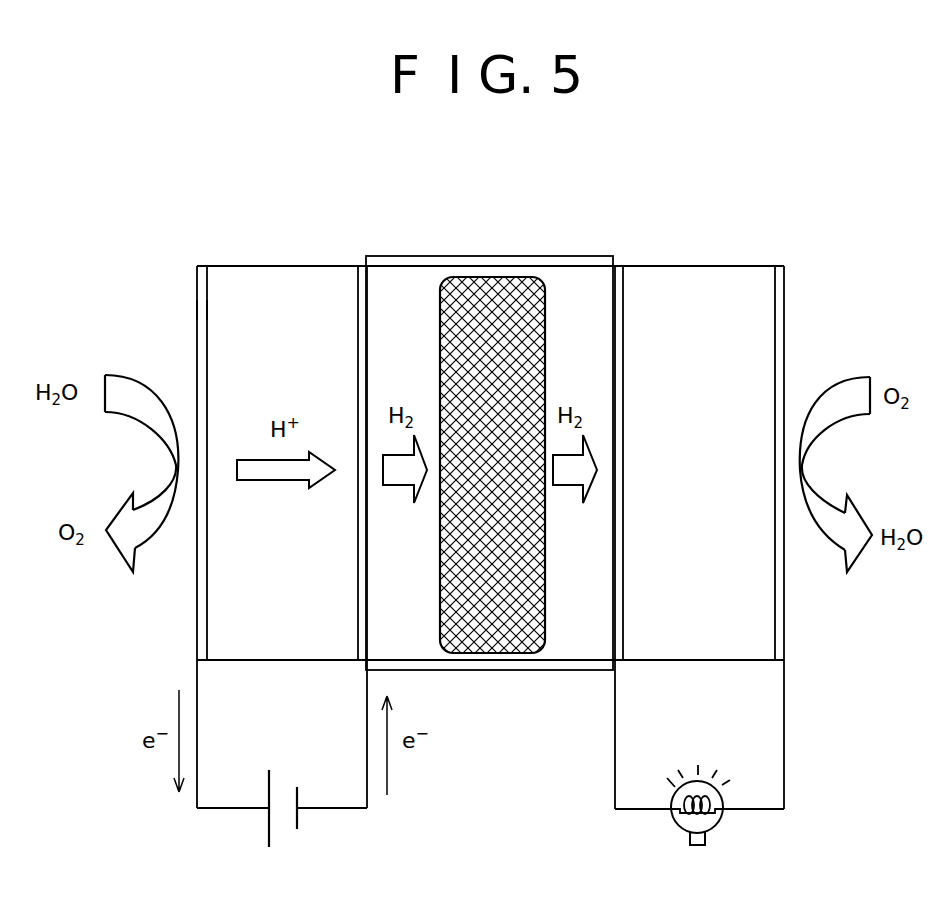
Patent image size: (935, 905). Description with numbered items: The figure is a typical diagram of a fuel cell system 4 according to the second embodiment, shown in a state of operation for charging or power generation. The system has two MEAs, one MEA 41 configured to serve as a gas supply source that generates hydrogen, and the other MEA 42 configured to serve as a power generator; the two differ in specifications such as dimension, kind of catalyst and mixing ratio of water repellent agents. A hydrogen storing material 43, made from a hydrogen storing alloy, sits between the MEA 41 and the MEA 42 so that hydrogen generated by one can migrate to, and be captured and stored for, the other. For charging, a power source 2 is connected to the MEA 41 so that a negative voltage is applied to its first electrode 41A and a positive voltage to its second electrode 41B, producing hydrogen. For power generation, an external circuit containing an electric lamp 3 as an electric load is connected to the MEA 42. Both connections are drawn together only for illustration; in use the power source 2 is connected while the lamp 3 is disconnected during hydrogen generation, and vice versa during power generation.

The fuel cell system 4 is at (781, 218).
The one MEA 41 is at (247, 240).
The first electrode 41A is at (360, 298).
The second electrode 41B is at (199, 309).
The other MEA 42 is at (708, 241).
The hydrogen storing material 43 is at (503, 284).
The power source 2 is at (297, 818).
The electric lamp 3 is at (722, 822).